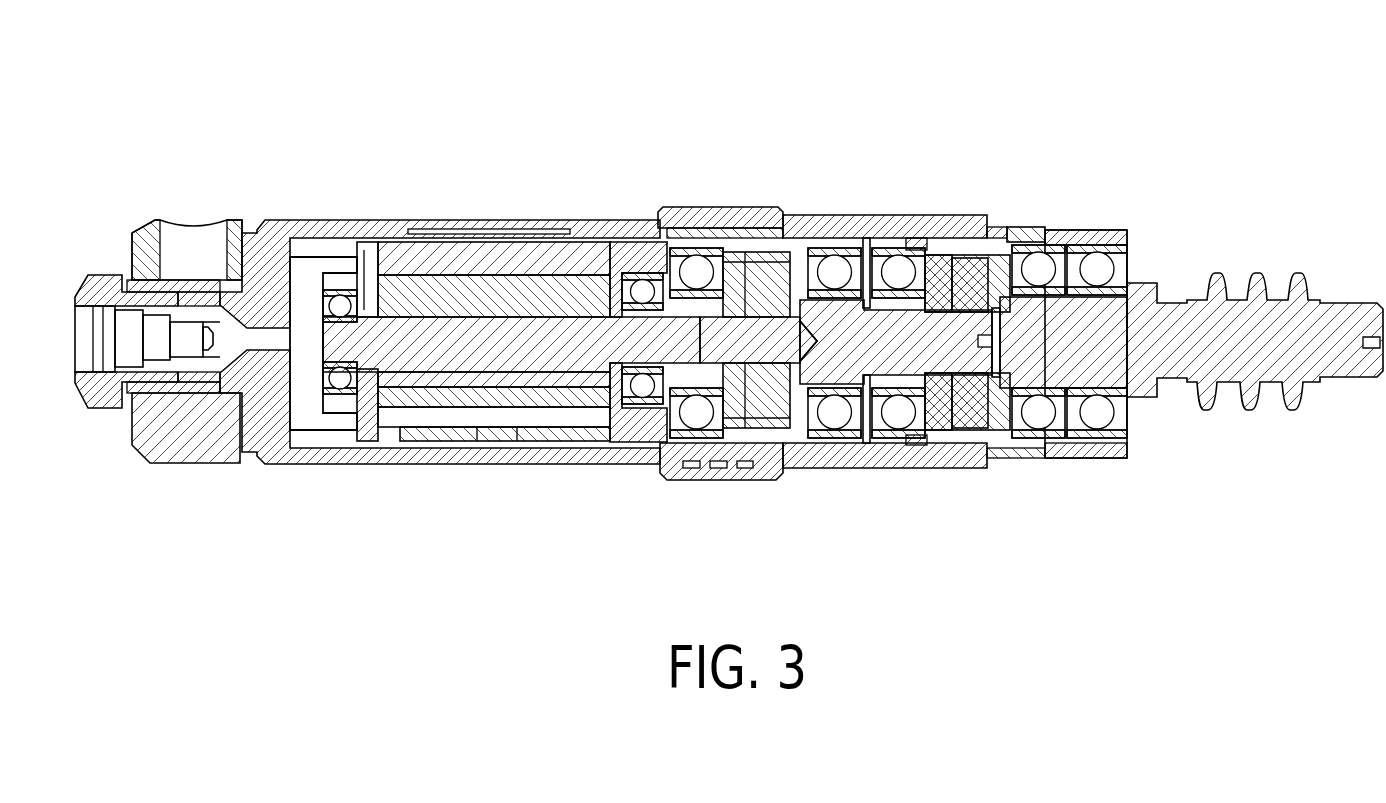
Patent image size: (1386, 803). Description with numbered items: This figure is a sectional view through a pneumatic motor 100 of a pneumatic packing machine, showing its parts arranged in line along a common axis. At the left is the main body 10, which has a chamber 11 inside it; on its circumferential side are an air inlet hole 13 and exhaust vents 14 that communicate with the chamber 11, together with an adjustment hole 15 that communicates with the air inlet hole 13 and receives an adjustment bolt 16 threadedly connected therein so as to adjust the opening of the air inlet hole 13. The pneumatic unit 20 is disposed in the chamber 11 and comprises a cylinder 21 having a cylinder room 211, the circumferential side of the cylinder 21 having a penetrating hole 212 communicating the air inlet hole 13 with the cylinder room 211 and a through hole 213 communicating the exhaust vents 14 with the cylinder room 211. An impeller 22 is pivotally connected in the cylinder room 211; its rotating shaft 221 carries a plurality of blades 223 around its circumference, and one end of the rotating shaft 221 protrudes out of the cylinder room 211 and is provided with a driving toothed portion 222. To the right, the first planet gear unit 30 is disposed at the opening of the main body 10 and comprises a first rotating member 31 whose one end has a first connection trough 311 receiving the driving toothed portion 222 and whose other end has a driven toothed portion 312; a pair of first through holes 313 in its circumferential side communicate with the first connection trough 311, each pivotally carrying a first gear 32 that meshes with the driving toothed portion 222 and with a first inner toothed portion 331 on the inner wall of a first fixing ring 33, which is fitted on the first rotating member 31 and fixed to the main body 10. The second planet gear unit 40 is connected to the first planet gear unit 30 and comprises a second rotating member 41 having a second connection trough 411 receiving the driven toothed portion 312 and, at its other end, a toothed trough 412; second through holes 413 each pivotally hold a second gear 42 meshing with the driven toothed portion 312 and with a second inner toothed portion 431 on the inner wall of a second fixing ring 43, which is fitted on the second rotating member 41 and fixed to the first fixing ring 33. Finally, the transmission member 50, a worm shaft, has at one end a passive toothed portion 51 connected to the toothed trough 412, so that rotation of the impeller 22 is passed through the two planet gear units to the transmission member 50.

The pneumatic motor 100 is at (1113, 110).
The main body 10 is at (632, 276).
The chamber 11 is at (430, 232).
The air inlet hole 13 is at (200, 240).
The exhaust vent 14 is at (720, 470).
The adjustment hole 15 is at (155, 440).
The adjustment bolt 16 is at (85, 335).
The pneumatic unit 20 is at (575, 338).
The cylinder 21 is at (505, 250).
The impeller 22 is at (390, 352).
The cylinder room 211 is at (552, 412).
The penetrating hole 212 is at (368, 300).
The through hole 213 is at (495, 430).
The rotating shaft 221 is at (647, 350).
The driving toothed portion 222 is at (792, 326).
The blades 223 is at (452, 380).
The first planet gear unit 30 is at (802, 345).
The first rotating member 31 is at (848, 318).
The first gear 32 is at (778, 275).
The first fixing ring 33 is at (752, 222).
The first connection trough 311 is at (690, 278).
The driven toothed portion 312 is at (880, 270).
The first through hole 313 is at (866, 442).
The first inner toothed portion 331 is at (730, 258).
The second planet gear unit 40 is at (999, 327).
The second rotating member 41 is at (1017, 432).
The second gear 42 is at (1000, 232).
The second fixing ring 43 is at (1040, 240).
The second connection trough 411 is at (900, 432).
The toothed trough 412 is at (1075, 425).
The second through hole 413 is at (945, 430).
The second inner toothed portion 431 is at (935, 255).
The transmission member 50 is at (1191, 280).
The passive toothed portion 51 is at (1105, 327).